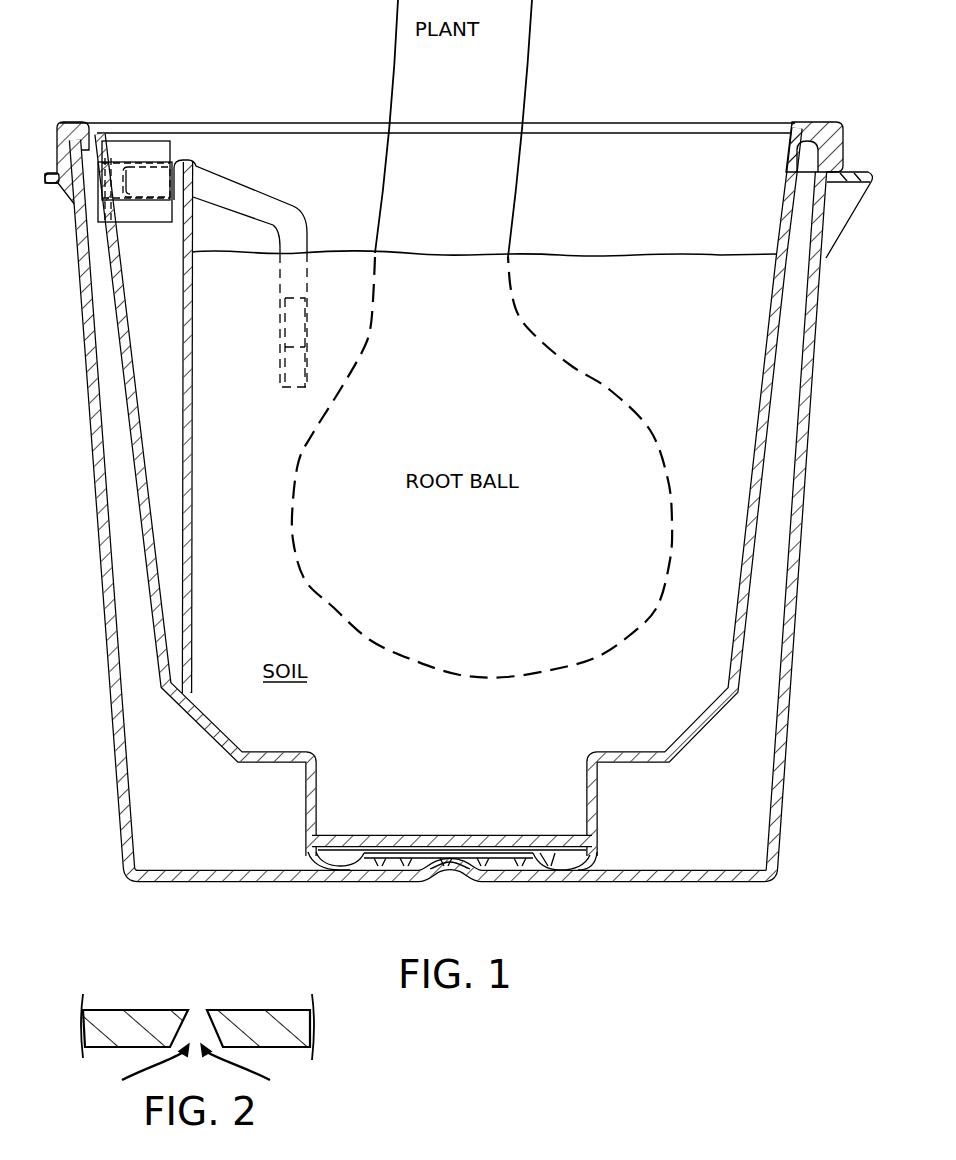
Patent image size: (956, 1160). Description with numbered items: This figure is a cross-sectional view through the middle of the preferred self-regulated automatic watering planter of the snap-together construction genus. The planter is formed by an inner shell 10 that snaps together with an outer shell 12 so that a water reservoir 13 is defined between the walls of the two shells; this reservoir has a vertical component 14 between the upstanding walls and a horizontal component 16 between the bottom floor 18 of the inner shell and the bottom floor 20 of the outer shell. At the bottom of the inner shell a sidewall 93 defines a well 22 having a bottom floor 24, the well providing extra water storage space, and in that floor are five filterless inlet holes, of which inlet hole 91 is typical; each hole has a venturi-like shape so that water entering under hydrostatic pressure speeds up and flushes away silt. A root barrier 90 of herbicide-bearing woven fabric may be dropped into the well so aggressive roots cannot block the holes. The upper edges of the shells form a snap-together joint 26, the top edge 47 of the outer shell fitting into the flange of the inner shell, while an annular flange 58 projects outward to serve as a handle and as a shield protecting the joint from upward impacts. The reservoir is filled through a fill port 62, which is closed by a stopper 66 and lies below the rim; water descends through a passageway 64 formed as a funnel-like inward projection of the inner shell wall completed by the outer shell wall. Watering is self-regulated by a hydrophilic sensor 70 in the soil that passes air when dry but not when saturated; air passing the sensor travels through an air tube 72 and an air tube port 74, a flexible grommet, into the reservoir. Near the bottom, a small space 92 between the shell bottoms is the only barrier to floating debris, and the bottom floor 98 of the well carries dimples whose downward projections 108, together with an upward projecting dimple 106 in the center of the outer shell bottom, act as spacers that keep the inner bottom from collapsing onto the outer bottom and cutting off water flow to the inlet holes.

In FIG. 1, the inner shell 10 is at (758, 389).
In FIG. 1, the outer shell 12 is at (805, 452).
In FIG. 1, the water reservoir 13 is at (776, 566).
In FIG. 1, the vertical component of the water reservoir 14 is at (745, 644).
In FIG. 1, the horizontal component of the water reservoir 16 is at (673, 821).
In FIG. 1, the bottom floor of the inner shell 18 is at (616, 728).
In FIG. 1, the bottom floor of the outer shell 20 is at (170, 856).
In FIG. 1, the well 22 is at (471, 778).
In FIG. 1, the bottom floor of the well 24 is at (400, 858).
In FIG. 1, the snap-together joint 26 is at (77, 104).
In FIG. 1, the top edge of the outer shell 47 is at (801, 152).
In FIG. 1, the annular flange 58 is at (50, 187).
In FIG. 1, the fill port 62 is at (146, 213).
In FIG. 1, the passageway 64 is at (145, 345).
In FIG. 1, the stopper 66 is at (172, 143).
In FIG. 1, the hydrophilic sensor 70 is at (297, 365).
In FIG. 1, the air tube 72 is at (296, 207).
In FIG. 1, the air tube port 74 is at (138, 178).
In FIG. 1, the root barrier 90 is at (388, 835).
In FIG. 1, the inlet hole 91 is at (373, 870).
In FIG. 2, the inlet hole 91 is at (197, 1007).
In FIG. 1, the space between bottom walls 92 is at (605, 862).
In FIG. 1, the sidewall of the well 93 is at (318, 766).
In FIG. 1, the dimple 98 is at (580, 880).
In FIG. 1, the upward projecting dimple 106 is at (445, 884).
In FIG. 1, the downward projections 108 is at (322, 868).